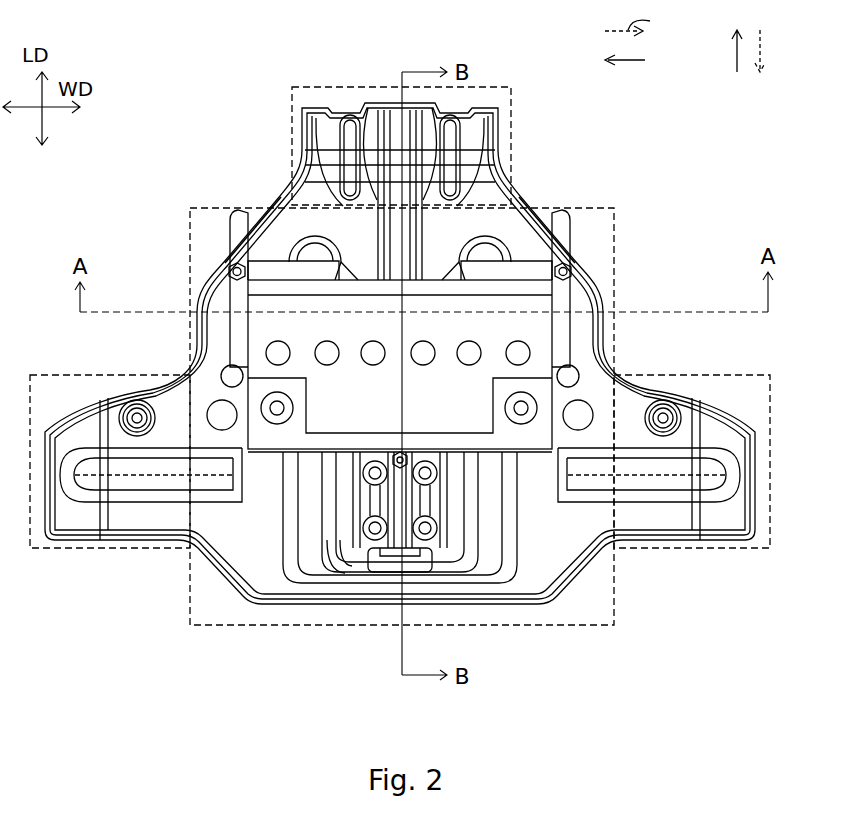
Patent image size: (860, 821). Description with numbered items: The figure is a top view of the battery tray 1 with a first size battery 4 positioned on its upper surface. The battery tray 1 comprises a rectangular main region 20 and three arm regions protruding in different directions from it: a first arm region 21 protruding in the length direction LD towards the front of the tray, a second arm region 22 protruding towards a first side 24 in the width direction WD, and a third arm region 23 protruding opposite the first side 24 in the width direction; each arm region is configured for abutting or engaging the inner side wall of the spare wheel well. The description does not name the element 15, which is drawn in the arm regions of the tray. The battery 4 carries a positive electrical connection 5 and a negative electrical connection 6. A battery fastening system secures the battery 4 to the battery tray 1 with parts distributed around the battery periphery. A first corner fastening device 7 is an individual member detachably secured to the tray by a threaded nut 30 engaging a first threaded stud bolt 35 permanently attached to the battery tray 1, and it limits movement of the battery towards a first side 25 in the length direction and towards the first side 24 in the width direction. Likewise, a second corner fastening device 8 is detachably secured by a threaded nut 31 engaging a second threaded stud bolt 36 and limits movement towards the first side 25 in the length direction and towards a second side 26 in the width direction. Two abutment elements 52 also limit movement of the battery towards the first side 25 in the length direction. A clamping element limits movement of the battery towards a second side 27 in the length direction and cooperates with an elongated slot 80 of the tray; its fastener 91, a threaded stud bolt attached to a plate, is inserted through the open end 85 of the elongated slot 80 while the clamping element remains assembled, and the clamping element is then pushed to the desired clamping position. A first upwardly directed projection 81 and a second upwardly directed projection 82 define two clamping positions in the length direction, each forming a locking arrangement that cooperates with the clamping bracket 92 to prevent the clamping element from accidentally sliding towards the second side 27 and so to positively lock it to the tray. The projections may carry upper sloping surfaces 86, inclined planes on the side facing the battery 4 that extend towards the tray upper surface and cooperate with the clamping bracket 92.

The battery tray 1 is at (560, 192).
The battery 4 is at (365, 338).
The positive electrical connection 5 is at (276, 413).
The negative electrical connection 6 is at (521, 413).
The first corner fastening device 7 is at (237, 305).
The second corner fastening device 8 is at (560, 347).
The fixing hole 15 is at (137, 414).
The main region 20 is at (614, 226).
The first arm region 21 is at (511, 135).
The second arm region 22 is at (92, 550).
The third arm region 23 is at (714, 550).
The first side in the width direction 24 is at (637, 57).
The first side in the length direction 25 is at (726, 51).
The second side in the width direction 26 is at (652, 21).
The second side in the length direction 27 is at (767, 48).
The threaded nut 30 is at (217, 247).
The threaded nut 31 is at (580, 297).
The first threaded stud bolt 35 is at (230, 263).
The second threaded stud bolt 36 is at (577, 262).
The abutment elements 52 is at (340, 256).
The elongated slot 80 is at (394, 568).
The first upwardly directed projection 81 is at (372, 478).
The second upwardly directed projection 82 is at (374, 530).
The open end 85 is at (417, 566).
The upper sloping surfaces 86 is at (440, 468).
The fastener 91 is at (447, 529).
The clamping bracket 92 is at (370, 463).